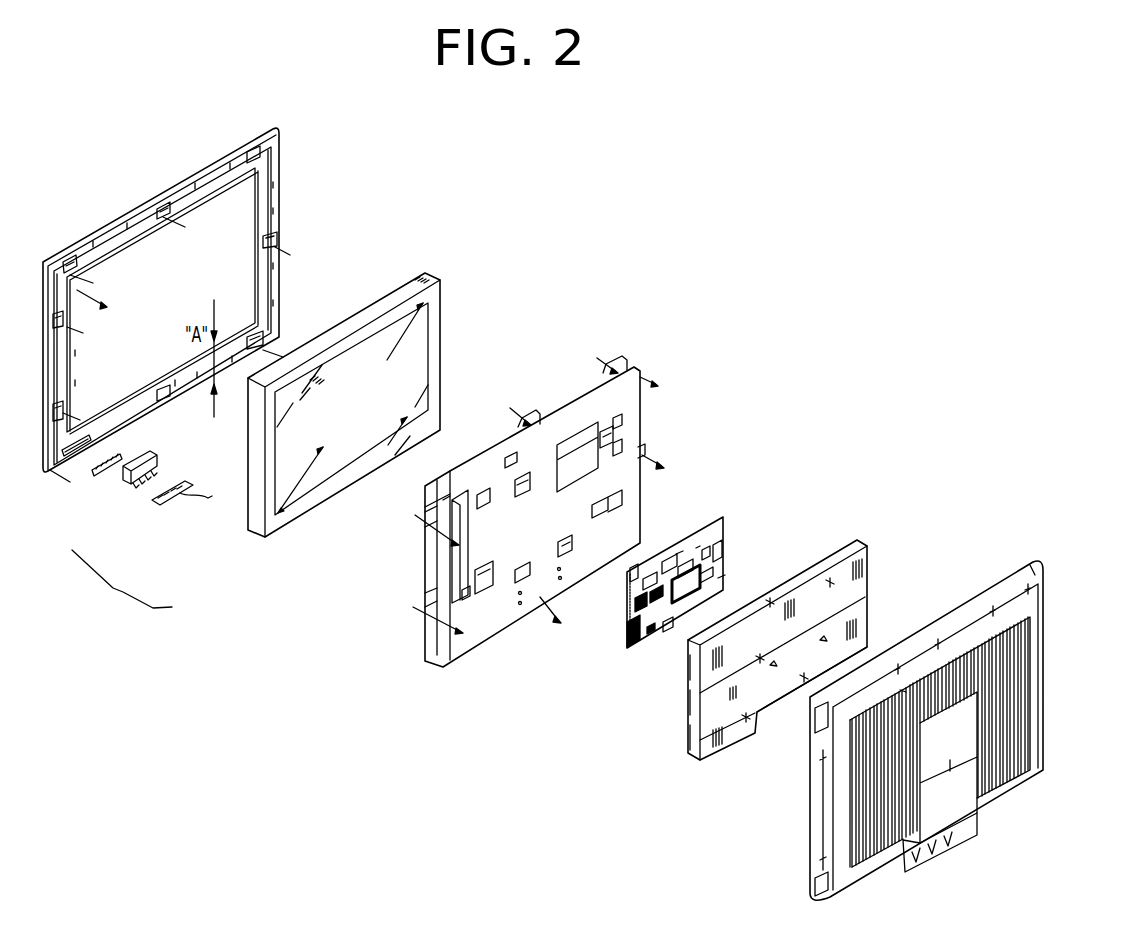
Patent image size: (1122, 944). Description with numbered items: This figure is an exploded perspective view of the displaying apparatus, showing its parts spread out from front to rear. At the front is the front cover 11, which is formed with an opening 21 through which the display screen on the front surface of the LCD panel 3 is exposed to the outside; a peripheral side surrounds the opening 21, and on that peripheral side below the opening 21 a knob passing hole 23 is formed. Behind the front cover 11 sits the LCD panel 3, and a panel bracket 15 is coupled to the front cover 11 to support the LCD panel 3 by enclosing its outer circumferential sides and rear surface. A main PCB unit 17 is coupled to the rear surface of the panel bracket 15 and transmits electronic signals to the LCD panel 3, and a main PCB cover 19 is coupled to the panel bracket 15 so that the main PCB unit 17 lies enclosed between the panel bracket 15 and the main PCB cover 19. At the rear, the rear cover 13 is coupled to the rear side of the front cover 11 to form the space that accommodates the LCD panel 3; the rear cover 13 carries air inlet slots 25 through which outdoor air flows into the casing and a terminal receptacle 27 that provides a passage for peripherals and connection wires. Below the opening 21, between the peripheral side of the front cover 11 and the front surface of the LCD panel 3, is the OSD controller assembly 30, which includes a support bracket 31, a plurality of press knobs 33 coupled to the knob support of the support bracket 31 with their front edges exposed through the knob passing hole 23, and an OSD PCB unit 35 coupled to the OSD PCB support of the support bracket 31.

The LCD panel 3 is at (422, 358).
The front cover 11 is at (143, 200).
The rear cover 13 is at (1030, 562).
The panel bracket 15 is at (632, 487).
The main PCB unit 17 is at (723, 535).
The main PCB cover 19 is at (867, 587).
The opening 21 is at (253, 252).
The knob passing hole 23 is at (70, 460).
The air inlet slots 25 is at (1023, 720).
The terminal receptacle 27 is at (953, 800).
The OSD controller assembly 30 is at (117, 622).
The support bracket 31 is at (137, 488).
The press knobs 33 is at (105, 480).
The OSD PCB unit 35 is at (170, 507).